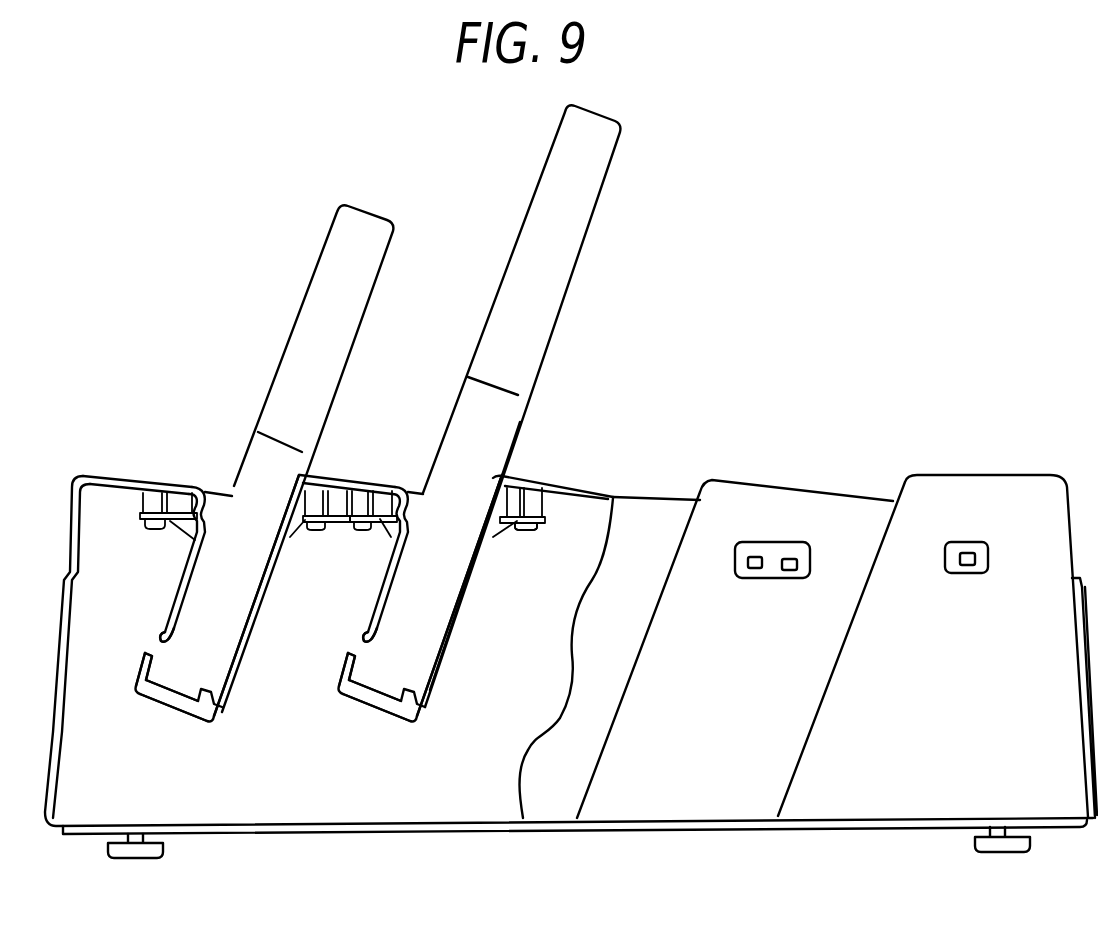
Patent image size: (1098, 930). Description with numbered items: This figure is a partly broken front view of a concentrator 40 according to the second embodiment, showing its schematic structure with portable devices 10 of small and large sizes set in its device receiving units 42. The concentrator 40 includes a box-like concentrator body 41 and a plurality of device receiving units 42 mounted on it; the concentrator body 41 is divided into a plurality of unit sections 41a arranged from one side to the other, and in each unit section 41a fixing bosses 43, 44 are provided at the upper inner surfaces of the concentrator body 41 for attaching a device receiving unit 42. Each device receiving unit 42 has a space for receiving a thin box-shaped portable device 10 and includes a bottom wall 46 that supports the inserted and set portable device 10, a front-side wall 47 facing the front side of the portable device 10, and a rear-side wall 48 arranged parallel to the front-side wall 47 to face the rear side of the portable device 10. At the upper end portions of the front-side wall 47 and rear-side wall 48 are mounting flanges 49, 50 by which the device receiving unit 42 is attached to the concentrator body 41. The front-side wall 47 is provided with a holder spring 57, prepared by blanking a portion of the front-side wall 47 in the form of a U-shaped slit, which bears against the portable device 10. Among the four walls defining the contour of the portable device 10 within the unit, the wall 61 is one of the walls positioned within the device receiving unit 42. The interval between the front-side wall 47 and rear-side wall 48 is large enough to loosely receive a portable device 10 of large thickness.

The portable device 10 is at (297, 315).
The concentrator 40 is at (726, 473).
The concentrator body 41 is at (829, 503).
The unit section 41a is at (223, 481).
The device receiving unit 42 is at (233, 711).
The fixing boss 43 is at (531, 507).
The fixing boss 44 is at (361, 497).
The bottom wall 46 is at (188, 713).
The front-side wall 47 is at (146, 668).
The rear-side wall 48 is at (254, 623).
The mounting flange 49 is at (379, 521).
The mounting flange 50 is at (517, 521).
The holder spring 57 is at (362, 633).
The wall 61 is at (521, 422).